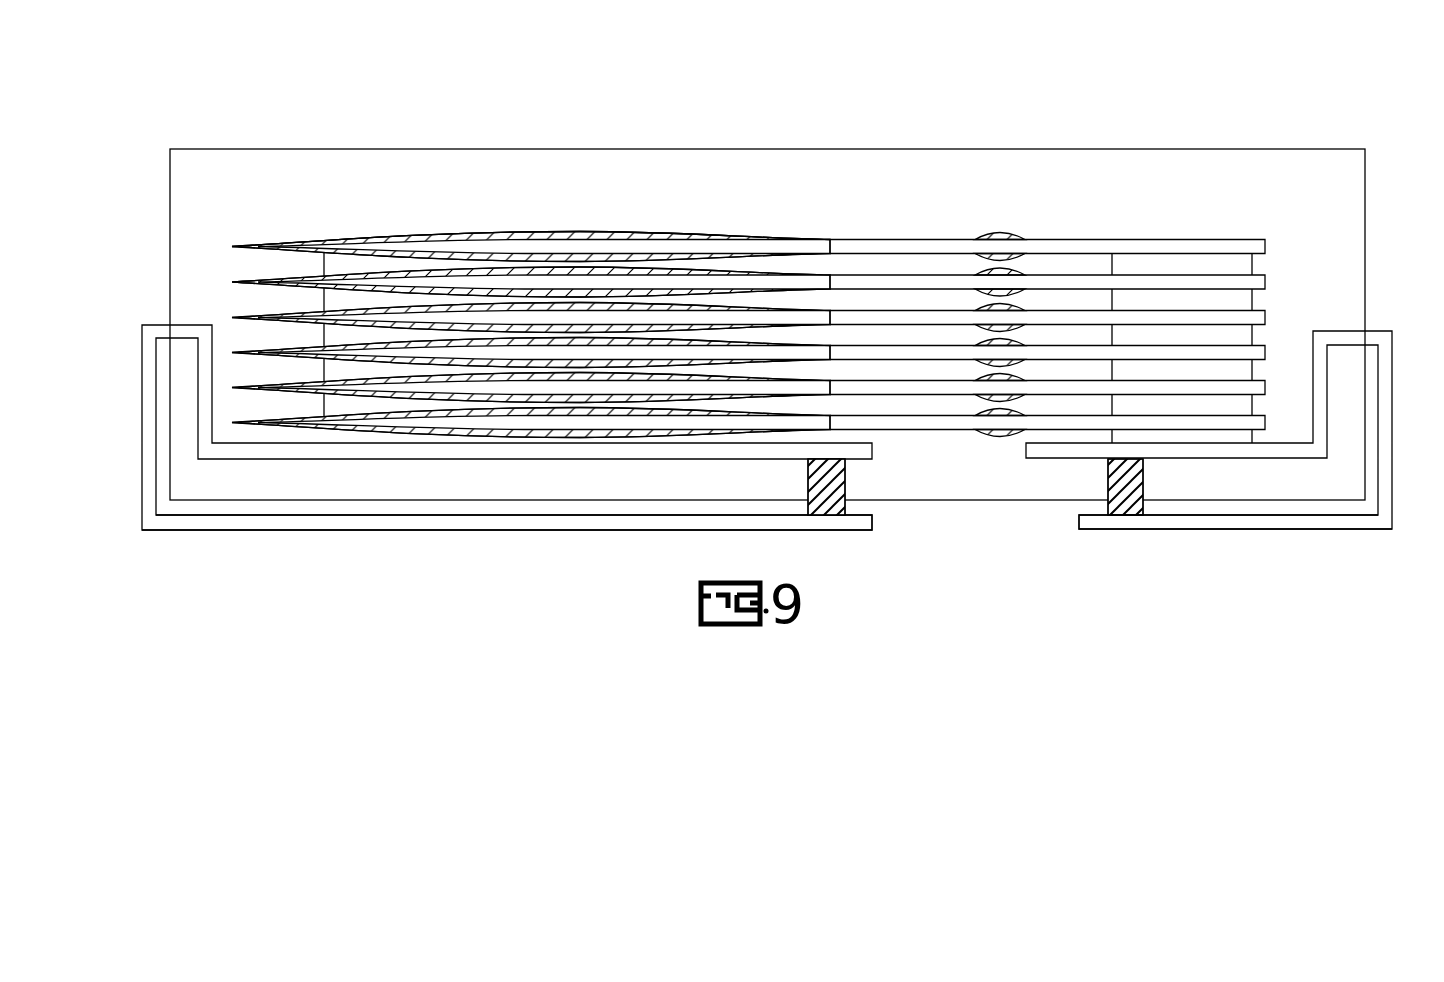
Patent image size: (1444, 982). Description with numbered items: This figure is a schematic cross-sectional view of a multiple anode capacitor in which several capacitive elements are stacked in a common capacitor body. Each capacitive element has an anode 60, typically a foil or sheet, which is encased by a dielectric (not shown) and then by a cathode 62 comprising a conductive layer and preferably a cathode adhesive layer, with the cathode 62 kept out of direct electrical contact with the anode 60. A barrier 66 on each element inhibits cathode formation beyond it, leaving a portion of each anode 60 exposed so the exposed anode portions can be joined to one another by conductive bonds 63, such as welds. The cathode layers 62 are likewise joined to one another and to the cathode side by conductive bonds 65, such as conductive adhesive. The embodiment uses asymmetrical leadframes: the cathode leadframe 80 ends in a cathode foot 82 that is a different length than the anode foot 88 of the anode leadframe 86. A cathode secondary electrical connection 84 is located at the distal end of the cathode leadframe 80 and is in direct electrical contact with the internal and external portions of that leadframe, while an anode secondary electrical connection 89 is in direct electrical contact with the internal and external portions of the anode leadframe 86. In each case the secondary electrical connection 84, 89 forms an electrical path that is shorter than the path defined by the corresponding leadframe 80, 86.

The anode 60 is at (655, 320).
The cathode 62 is at (473, 233).
The conductive bonds 63 is at (1228, 340).
The conductive bonds 65 is at (375, 337).
The barrier 66 is at (1000, 237).
The cathode leadframe 80 is at (141, 457).
The cathode foot 82 is at (203, 531).
The cathode secondary electrical connection 84 is at (838, 478).
The anode leadframe 86 is at (1393, 410).
The anode foot 88 is at (1310, 531).
The anode secondary electrical connection 89 is at (1115, 478).